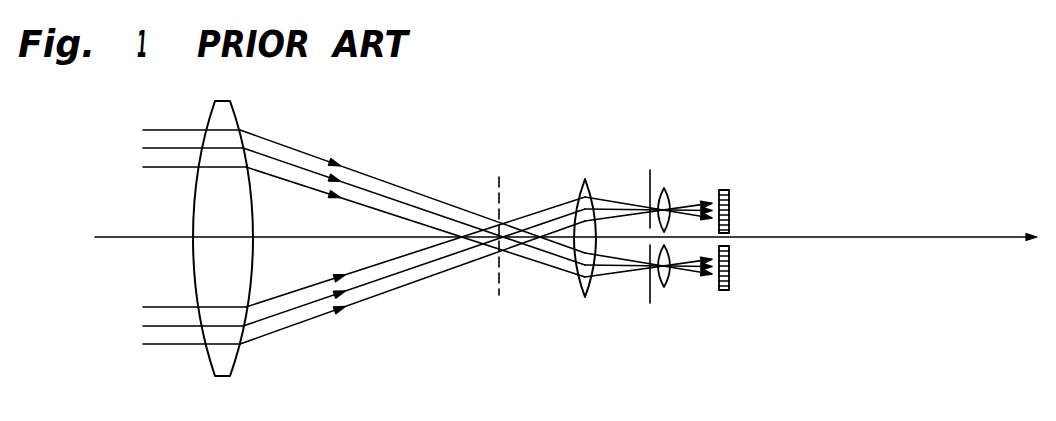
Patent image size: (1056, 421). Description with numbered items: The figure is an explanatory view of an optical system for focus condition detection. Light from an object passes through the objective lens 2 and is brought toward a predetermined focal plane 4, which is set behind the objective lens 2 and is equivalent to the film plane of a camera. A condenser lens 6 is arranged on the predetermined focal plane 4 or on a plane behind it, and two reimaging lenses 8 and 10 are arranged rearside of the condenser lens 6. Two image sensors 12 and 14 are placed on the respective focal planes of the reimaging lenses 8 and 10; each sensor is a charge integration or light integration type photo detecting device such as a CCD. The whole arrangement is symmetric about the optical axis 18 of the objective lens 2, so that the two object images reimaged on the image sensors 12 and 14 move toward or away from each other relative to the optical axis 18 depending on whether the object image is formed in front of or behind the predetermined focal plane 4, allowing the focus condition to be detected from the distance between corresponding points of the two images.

The objective lens 2 is at (223, 362).
The predetermined focal plane 4 is at (498, 288).
The condenser lens 6 is at (586, 293).
The reimaging lens 8 is at (665, 189).
The reimaging lens 10 is at (665, 287).
The image sensor 12 is at (728, 190).
The image sensor 14 is at (730, 285).
The optical axis 18 is at (135, 237).